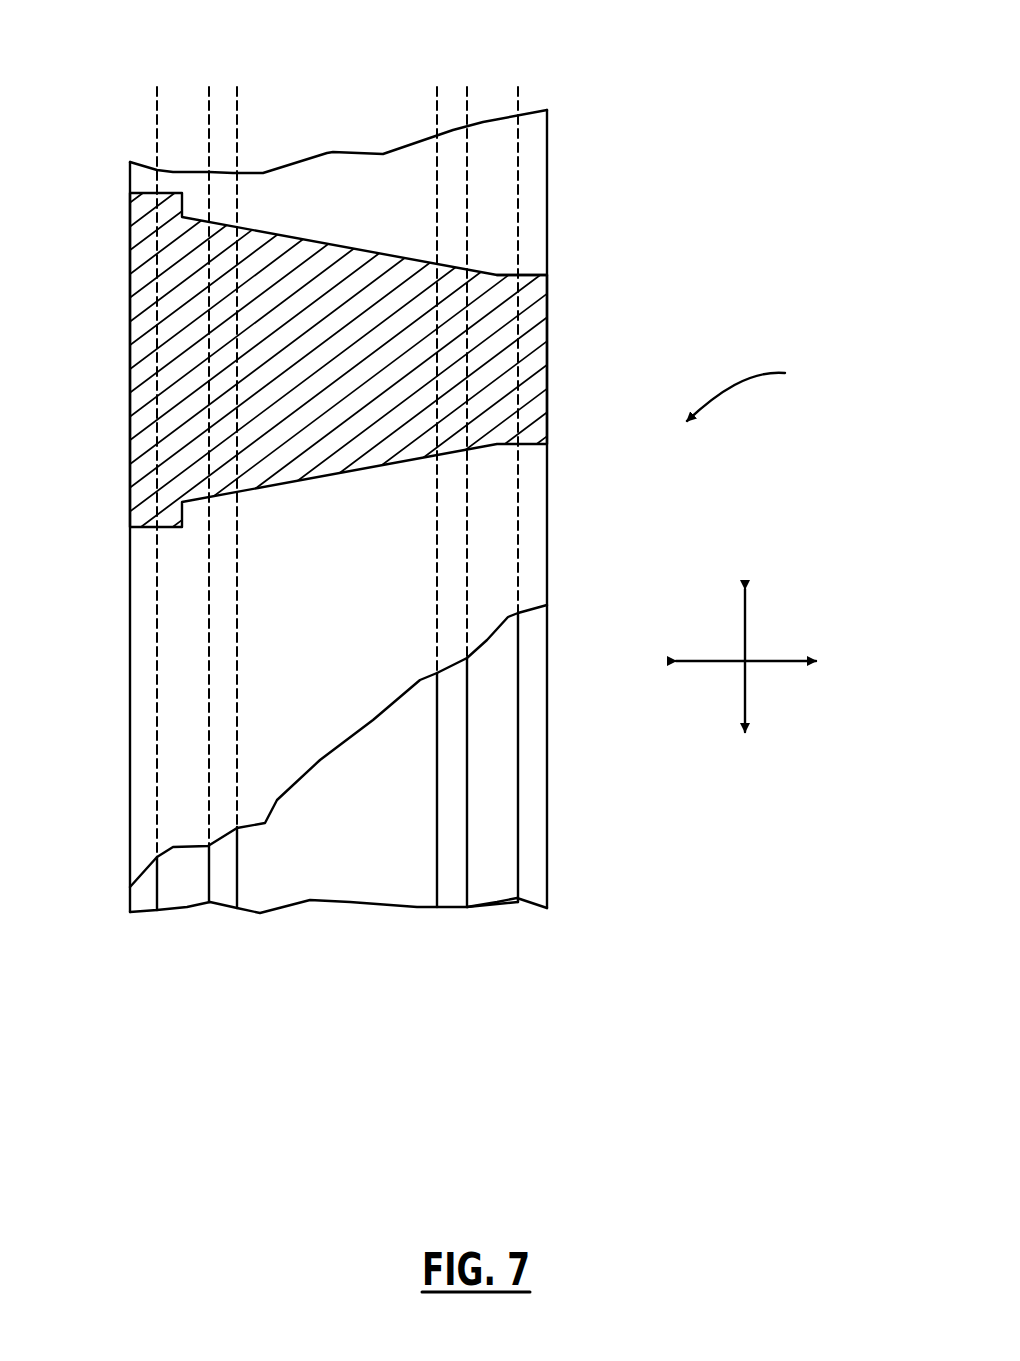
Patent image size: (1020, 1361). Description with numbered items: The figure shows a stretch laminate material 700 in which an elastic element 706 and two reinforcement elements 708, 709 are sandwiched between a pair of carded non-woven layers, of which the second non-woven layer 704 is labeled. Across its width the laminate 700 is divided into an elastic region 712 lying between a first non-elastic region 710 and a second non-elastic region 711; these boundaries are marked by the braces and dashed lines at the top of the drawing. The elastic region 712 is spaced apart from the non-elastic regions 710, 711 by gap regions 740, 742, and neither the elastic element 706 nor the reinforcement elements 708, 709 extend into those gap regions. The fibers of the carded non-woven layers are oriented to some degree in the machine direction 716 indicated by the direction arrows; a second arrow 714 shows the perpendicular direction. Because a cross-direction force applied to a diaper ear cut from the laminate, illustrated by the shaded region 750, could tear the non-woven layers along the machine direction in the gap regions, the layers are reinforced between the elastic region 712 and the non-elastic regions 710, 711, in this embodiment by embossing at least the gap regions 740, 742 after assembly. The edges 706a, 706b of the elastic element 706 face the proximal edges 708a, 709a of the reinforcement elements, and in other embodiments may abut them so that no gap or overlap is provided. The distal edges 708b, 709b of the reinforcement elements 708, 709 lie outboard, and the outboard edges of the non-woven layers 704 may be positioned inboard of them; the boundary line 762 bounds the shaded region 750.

The stretch laminate material 700 is at (765, 388).
The second non-woven layer 704 is at (540, 864).
The elastic element 706 is at (308, 873).
The edge of the elastomeric element 706a is at (237, 862).
The edge of the elastomeric element 706b is at (437, 860).
The reinforcement element 708 is at (182, 890).
The proximal edge of the reinforcing member 708a is at (210, 887).
The distal edge of the reinforcement member 708b is at (155, 889).
The reinforcement element 709 is at (495, 867).
The proximal edge of the reinforcing member 709a is at (467, 828).
The distal edge of the reinforcement member 709b is at (520, 840).
The first non-elastic region 710 is at (209, 84).
The second non-elastic region 711 is at (518, 84).
The elastic region 712 is at (437, 84).
The axial direction 714 is at (745, 633).
The machine direction 716 is at (773, 662).
The gap region 740 is at (237, 84).
The gap region 742 is at (467, 84).
The shaded region 750 is at (393, 282).
The seal surface 762 is at (537, 297).